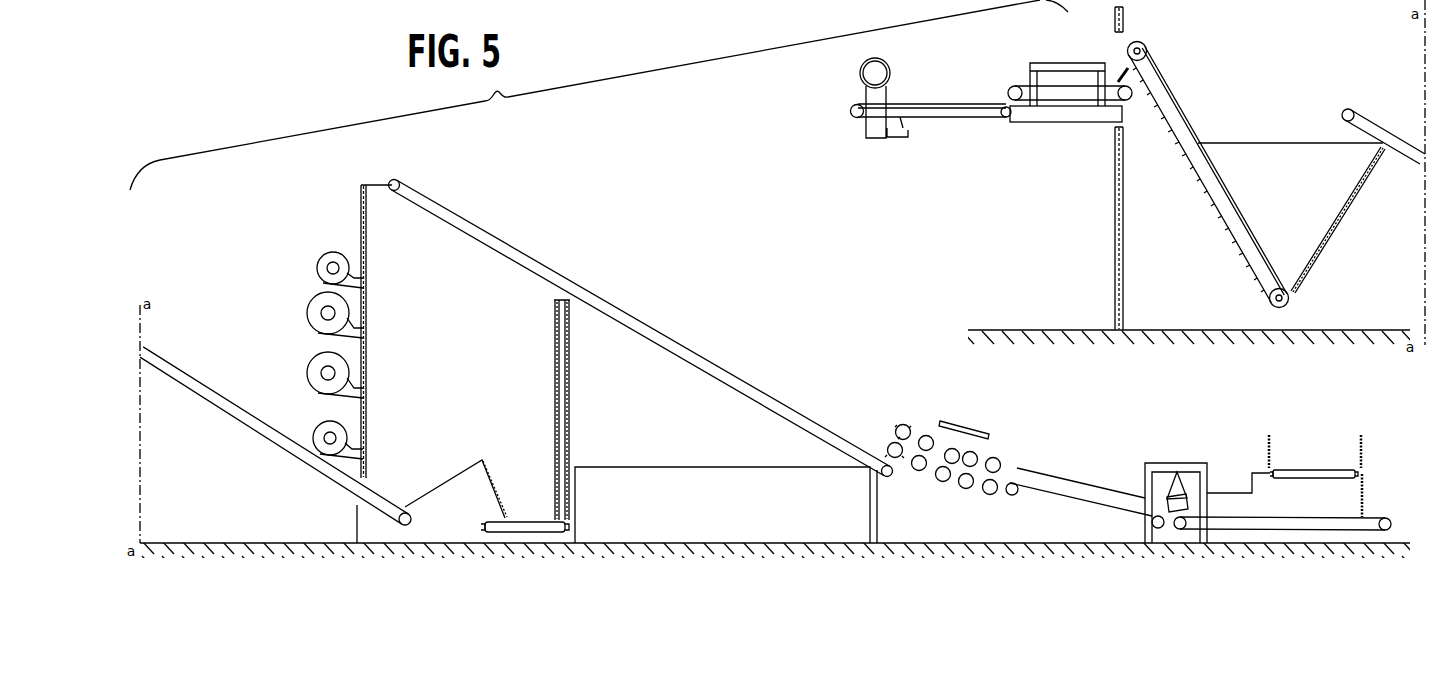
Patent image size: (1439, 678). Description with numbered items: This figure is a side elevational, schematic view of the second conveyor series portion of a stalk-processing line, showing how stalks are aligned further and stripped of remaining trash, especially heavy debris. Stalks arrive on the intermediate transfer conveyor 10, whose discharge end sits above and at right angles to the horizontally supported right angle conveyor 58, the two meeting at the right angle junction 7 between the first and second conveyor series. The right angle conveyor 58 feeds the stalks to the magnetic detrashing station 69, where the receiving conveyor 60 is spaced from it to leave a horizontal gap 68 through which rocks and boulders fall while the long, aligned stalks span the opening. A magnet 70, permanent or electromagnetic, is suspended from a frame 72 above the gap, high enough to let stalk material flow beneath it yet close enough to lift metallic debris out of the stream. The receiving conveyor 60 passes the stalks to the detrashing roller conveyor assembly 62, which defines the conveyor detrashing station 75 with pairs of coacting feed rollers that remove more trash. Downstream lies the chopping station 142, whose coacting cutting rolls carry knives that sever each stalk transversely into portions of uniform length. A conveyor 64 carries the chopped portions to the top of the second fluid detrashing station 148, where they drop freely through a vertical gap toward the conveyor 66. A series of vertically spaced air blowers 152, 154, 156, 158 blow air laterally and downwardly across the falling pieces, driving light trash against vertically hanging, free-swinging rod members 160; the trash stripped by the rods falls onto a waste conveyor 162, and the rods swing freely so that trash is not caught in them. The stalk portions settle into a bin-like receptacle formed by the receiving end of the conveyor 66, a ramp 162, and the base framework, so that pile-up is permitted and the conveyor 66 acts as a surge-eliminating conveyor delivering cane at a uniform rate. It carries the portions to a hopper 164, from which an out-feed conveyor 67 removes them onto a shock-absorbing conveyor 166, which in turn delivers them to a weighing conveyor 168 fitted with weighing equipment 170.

The right angle junction 7 is at (1372, 454).
The intermediate transfer conveyor 10 is at (1330, 468).
The right angle conveyor 58 is at (1378, 517).
The receiving conveyor 60 is at (1065, 490).
The detrashing roller conveyor assembly 62 is at (1001, 453).
The conveyor 64 is at (786, 404).
The conveyor 66 is at (217, 394).
The out-feed conveyor 67 is at (1235, 220).
The horizontal gap 68 is at (1168, 532).
The magnetic detrashing station 69 is at (1180, 455).
The magnet 70 is at (1186, 501).
The frame 72 is at (1196, 463).
The conveyor detrashing station 75 is at (983, 419).
The chopping station 142 is at (918, 414).
The second fluid detrashing station 148 is at (357, 200).
The air blower 152 is at (322, 258).
The air blower 154 is at (310, 305).
The air blower 156 is at (308, 360).
The air blower 158 is at (322, 423).
The free-swinging rod members 160 is at (570, 398).
The waste conveyor 162 is at (466, 464).
The hopper 164 is at (1332, 193).
The shock-absorbing conveyor 166 is at (1025, 83).
The weighing conveyor 168 is at (960, 104).
The weighing equipment 170 is at (887, 78).